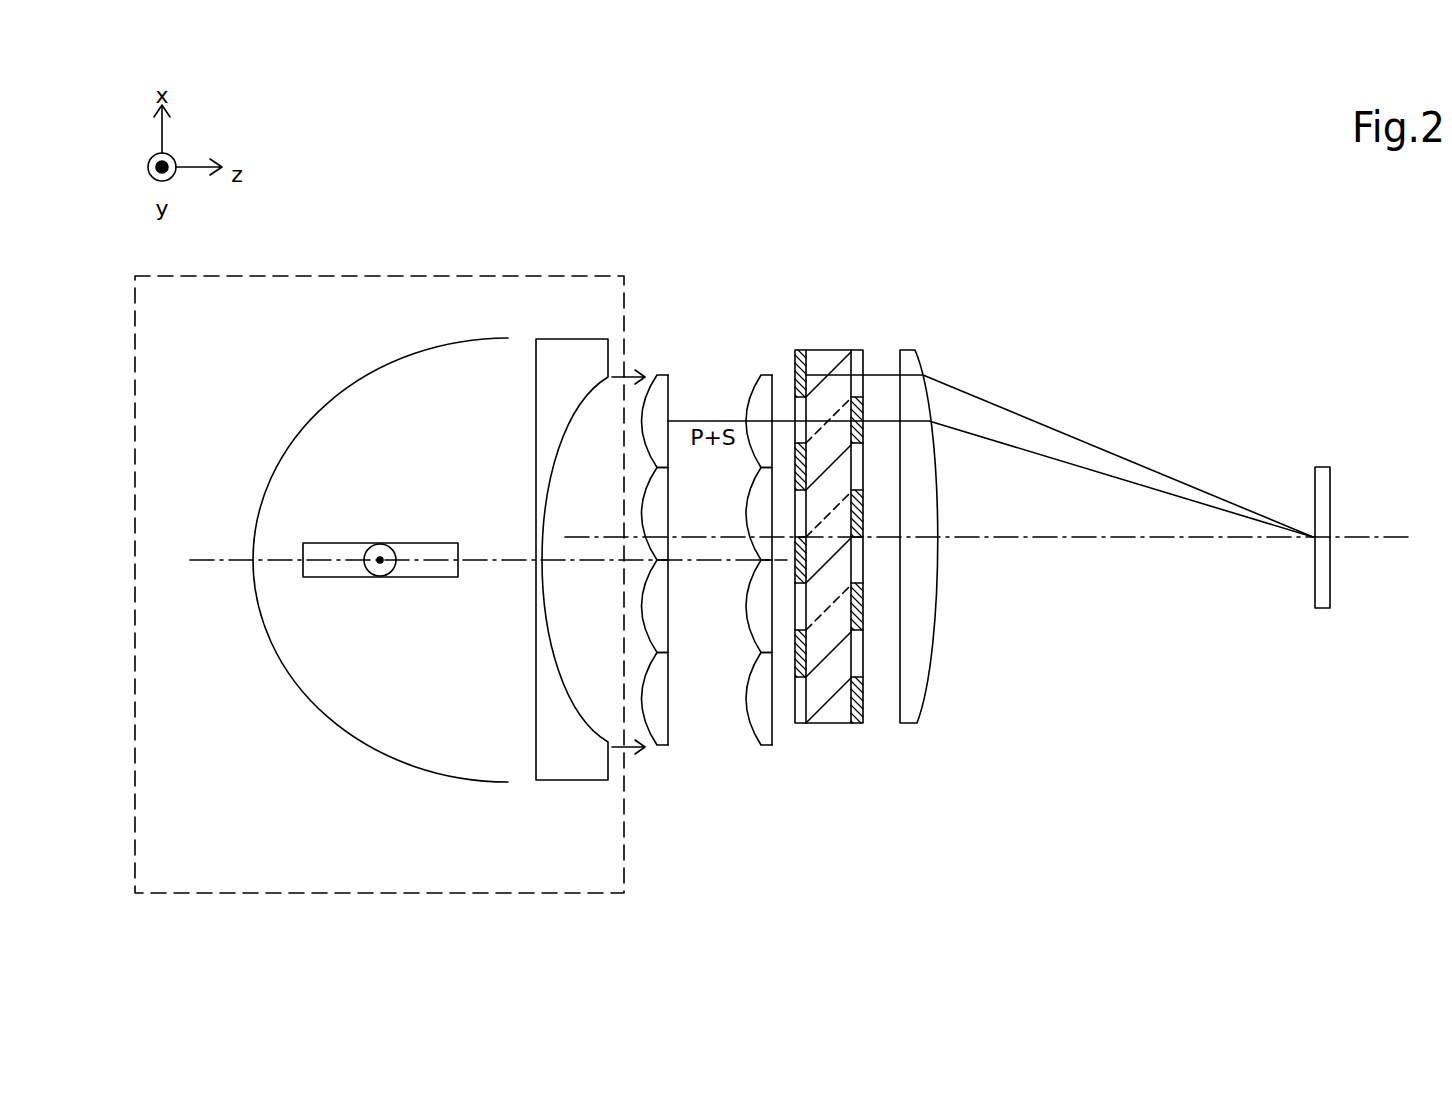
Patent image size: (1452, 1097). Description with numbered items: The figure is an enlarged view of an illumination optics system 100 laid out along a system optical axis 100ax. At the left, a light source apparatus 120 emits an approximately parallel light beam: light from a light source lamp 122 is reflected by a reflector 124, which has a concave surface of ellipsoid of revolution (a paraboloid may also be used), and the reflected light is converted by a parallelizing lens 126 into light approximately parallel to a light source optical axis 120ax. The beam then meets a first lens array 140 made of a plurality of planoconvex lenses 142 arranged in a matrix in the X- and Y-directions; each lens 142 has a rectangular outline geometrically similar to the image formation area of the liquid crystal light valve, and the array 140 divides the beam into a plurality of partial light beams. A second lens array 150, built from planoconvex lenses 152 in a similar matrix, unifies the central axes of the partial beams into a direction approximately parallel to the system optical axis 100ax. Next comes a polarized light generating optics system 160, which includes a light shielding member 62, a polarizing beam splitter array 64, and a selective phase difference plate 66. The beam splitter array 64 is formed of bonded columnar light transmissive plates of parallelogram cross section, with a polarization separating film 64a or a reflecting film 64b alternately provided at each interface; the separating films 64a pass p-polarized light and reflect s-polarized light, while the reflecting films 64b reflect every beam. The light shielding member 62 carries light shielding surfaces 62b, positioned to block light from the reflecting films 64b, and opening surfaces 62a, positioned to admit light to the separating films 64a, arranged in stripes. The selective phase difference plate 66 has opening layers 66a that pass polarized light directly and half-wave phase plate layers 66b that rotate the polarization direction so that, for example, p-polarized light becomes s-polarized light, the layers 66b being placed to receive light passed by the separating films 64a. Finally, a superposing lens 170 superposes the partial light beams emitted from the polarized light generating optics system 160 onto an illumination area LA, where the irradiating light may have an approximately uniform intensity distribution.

The illumination optics system 100 is at (343, 184).
The system optical axis 100ax is at (1383, 538).
The light source apparatus 120 is at (463, 275).
The light source optical axis 120ax is at (198, 557).
The light source lamp 122 is at (322, 578).
The reflector 124 is at (308, 424).
The parallelizing lens 126 is at (573, 781).
The first lens array 140 is at (693, 526).
The planoconvex lens 142 is at (660, 736).
The second lens array 150 is at (735, 519).
The planoconvex lens 152 is at (752, 697).
The polarized light generating optics system 160 is at (867, 549).
The superposing lens 170 is at (903, 350).
The light shielding member 62 is at (773, 599).
The opening surface 62a is at (798, 708).
The light shielding surface 62b is at (793, 653).
The polarizing beam splitter array 64 is at (907, 599).
The polarization separating film 64a is at (840, 605).
The reflecting film 64b is at (838, 568).
The selective phase difference plate 66 is at (907, 622).
The opening layer 66a is at (858, 660).
The λ/2 phase plate layer 66b is at (862, 707).
The illumination area LA is at (1322, 465).